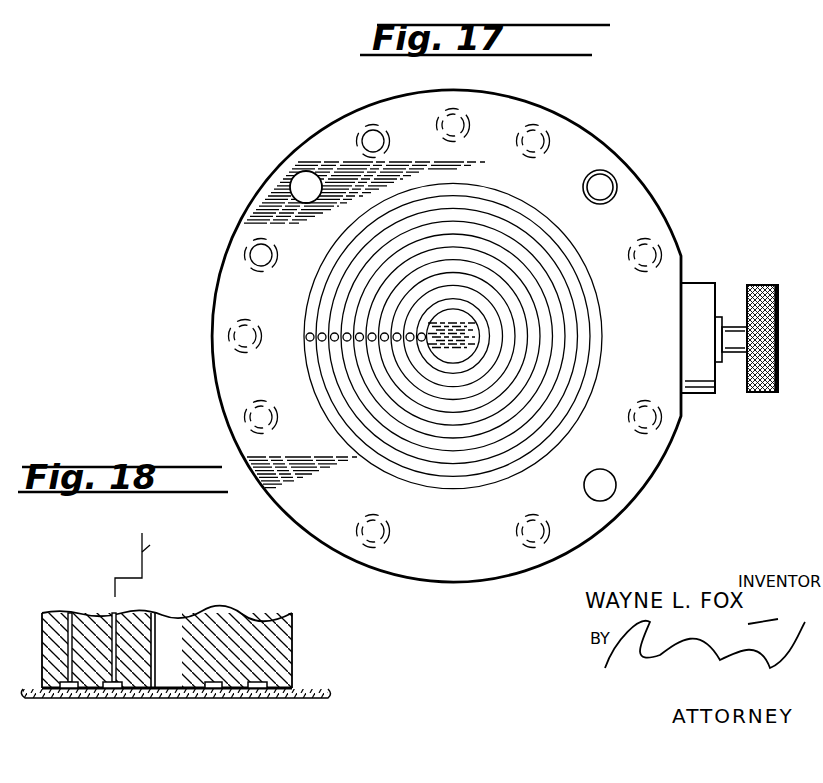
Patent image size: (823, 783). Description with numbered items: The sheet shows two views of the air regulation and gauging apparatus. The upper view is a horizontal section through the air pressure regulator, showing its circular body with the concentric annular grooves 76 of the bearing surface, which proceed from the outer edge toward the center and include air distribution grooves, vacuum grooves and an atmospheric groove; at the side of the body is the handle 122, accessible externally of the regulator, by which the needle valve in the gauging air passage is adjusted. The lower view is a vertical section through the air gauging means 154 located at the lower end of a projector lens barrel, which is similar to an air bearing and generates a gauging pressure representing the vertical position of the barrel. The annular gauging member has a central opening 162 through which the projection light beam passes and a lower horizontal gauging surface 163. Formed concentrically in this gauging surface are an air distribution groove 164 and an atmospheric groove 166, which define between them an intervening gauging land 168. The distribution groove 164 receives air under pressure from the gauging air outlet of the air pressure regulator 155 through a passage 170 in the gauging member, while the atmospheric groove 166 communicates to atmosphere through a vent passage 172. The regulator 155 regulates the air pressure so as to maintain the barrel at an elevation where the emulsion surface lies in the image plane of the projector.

In FIG. 17, the annular grooves 76 is at (281, 168).
In FIG. 17, the handle 122 is at (766, 285).
In FIG. 18, the air gauging means 154 is at (287, 601).
In FIG. 18, the air pressure regulator 155 is at (154, 565).
In FIG. 18, the central opening 162 is at (180, 628).
In FIG. 18, the gauging surface 163 is at (277, 688).
In FIG. 18, the air distribution groove 164 is at (115, 689).
In FIG. 18, the atmospheric groove 166 is at (68, 689).
In FIG. 18, the gauging land 168 is at (241, 689).
In FIG. 18, the passage 170 is at (113, 632).
In FIG. 18, the vent passage 172 is at (68, 637).